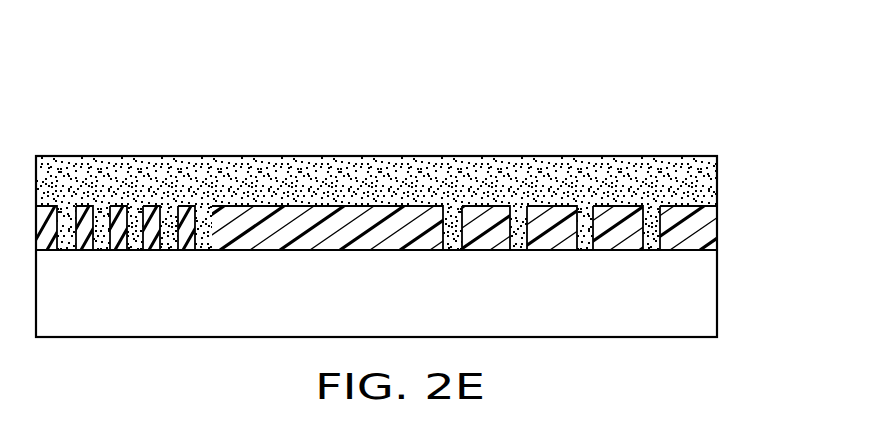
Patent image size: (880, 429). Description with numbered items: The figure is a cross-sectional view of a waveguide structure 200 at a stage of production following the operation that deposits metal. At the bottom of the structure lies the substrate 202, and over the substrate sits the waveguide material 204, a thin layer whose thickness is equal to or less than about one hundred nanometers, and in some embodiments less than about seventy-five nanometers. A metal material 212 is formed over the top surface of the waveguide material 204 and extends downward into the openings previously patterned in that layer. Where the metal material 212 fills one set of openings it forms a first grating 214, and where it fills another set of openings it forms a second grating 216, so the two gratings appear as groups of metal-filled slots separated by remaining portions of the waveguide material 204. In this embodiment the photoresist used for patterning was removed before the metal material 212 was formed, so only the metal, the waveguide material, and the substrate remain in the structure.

The waveguide structure 200 is at (779, 79).
The substrate 202 is at (707, 293).
The waveguide material 204 is at (707, 232).
The metal material 212 is at (718, 180).
The first grating 214 is at (210, 252).
The second grating 216 is at (663, 252).